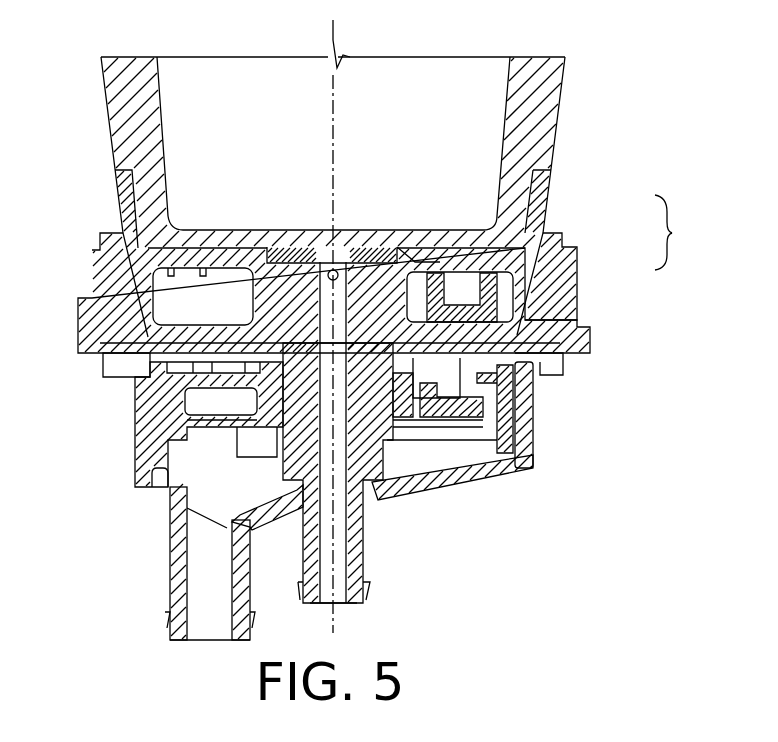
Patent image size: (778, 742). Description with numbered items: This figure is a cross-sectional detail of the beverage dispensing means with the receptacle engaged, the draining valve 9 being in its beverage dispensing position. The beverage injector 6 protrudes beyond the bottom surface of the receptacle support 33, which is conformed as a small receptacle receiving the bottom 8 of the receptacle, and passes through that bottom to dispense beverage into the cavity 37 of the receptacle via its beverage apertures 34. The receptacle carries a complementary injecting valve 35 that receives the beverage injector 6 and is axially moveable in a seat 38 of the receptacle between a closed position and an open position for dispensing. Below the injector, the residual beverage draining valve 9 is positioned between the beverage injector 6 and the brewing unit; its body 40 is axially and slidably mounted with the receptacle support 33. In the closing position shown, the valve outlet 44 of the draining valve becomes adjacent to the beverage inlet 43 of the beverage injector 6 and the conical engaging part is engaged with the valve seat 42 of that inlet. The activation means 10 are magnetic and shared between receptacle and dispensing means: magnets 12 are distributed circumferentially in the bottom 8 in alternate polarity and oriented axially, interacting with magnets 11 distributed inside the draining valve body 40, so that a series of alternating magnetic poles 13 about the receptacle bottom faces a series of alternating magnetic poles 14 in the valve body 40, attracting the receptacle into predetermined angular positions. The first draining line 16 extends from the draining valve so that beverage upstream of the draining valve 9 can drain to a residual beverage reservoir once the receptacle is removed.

The cavity of the receptacle 37 is at (175, 108).
The bottom of the receptacle 8 is at (553, 185).
The receptacle support 33 is at (103, 262).
The injecting valve 35 is at (287, 245).
The beverage apertures 34 is at (340, 249).
The beverage injector 6 is at (427, 247).
The magnets 12 is at (503, 273).
The magnets 11 is at (507, 327).
The activation means 10 is at (676, 232).
The alternating magnetic poles 13 is at (227, 287).
The seat of the receptacle 38 is at (295, 335).
The beverage inlet 43 is at (185, 440).
The alternating magnetic poles 14 is at (313, 383).
The valve outlet 44 is at (327, 413).
The first draining line 16 is at (177, 583).
The body of the draining valve 40 is at (523, 410).
The valve seat 42 is at (497, 452).
The residual beverage draining valve 9 is at (388, 445).